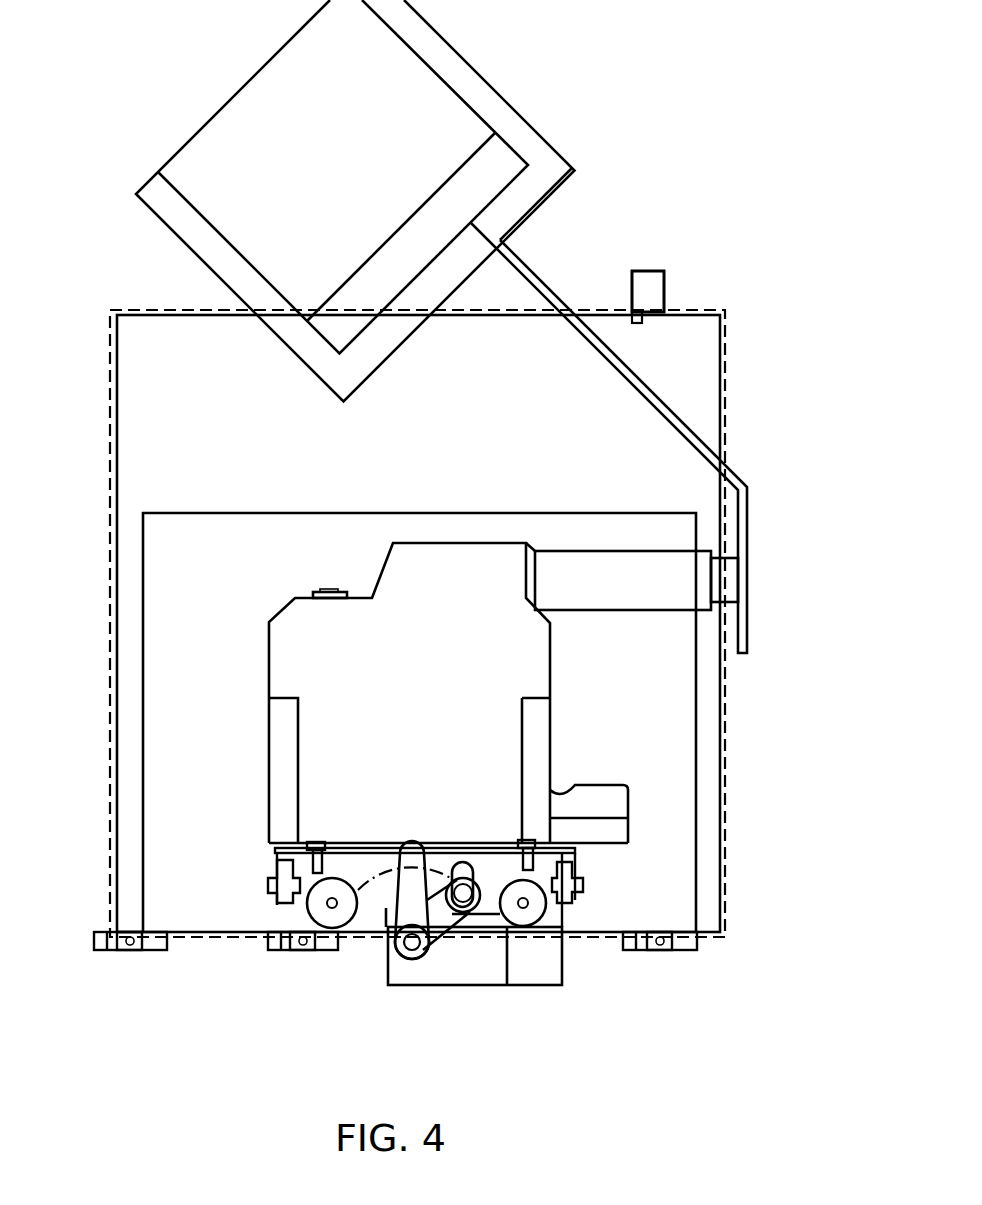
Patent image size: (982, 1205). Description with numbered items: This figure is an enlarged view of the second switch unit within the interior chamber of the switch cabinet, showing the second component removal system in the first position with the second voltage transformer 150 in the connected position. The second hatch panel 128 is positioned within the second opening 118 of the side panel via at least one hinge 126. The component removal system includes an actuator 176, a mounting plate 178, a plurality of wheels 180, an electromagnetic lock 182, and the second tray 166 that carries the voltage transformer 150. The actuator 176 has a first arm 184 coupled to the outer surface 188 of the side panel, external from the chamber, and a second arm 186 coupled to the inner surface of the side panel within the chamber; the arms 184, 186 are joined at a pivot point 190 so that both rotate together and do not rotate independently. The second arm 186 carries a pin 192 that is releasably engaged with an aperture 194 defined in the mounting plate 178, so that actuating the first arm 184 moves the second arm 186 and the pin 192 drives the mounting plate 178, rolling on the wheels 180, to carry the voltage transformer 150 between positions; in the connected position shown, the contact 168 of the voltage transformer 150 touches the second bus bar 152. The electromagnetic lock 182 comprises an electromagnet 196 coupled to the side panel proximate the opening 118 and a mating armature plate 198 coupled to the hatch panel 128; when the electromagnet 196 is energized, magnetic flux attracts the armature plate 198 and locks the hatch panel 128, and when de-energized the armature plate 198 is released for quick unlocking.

The second opening 118 is at (727, 437).
The hinge 126 is at (102, 953).
The second hatch panel 128 is at (720, 382).
The second voltage transformer 150 is at (268, 622).
The second bus bar 152 is at (747, 532).
The second tray 166 is at (275, 848).
The contact 168 is at (732, 580).
The actuator 176 is at (393, 903).
The mounting plate 178 is at (312, 880).
The wheels 180 is at (541, 912).
The electromagnetic lock 182 is at (683, 287).
The first arm 184 is at (395, 945).
The second arm 186 is at (463, 947).
The outer surface 188 is at (410, 960).
The pivot point 190 is at (458, 905).
The pin 192 is at (470, 912).
The aperture 194 is at (490, 918).
The electromagnet 196 is at (650, 271).
The armature plate 198 is at (634, 314).